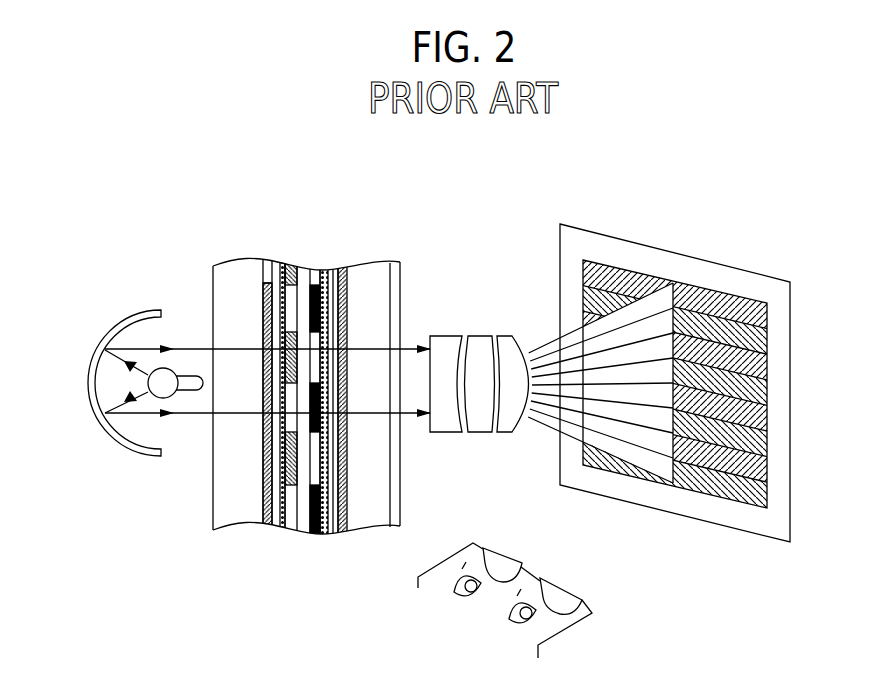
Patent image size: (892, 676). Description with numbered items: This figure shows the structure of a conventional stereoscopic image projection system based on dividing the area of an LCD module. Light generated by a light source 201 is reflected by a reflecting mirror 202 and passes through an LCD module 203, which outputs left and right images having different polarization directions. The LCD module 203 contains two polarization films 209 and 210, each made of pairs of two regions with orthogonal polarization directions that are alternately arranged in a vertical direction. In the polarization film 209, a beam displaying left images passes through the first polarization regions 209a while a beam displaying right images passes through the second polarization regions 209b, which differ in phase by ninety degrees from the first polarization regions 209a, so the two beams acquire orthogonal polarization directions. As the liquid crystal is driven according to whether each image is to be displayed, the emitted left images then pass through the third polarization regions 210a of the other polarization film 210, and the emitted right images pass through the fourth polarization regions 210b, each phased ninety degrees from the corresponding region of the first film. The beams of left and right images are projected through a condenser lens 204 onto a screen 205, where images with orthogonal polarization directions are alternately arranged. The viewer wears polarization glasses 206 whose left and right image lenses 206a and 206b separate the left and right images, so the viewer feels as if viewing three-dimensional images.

The light source 201 is at (153, 383).
The reflecting mirror 202 is at (130, 319).
The LCD module 203 is at (300, 368).
The condenser lens 204 is at (480, 357).
The screen 205 is at (720, 272).
The polarization glasses 206 is at (533, 581).
The left image lens 206a is at (507, 565).
The right image lens 206b is at (562, 597).
The polarization film 209 is at (174, 395).
The first polarization regions 209a is at (268, 463).
The second polarization regions 209b is at (268, 502).
The polarization film 210 is at (429, 395).
The third polarization regions 210a is at (348, 462).
The fourth polarization regions 210b is at (348, 504).